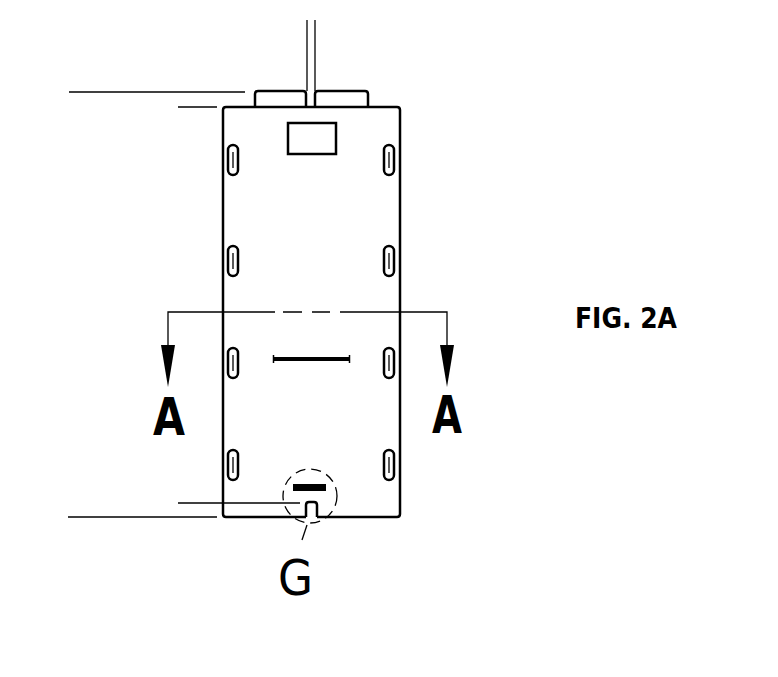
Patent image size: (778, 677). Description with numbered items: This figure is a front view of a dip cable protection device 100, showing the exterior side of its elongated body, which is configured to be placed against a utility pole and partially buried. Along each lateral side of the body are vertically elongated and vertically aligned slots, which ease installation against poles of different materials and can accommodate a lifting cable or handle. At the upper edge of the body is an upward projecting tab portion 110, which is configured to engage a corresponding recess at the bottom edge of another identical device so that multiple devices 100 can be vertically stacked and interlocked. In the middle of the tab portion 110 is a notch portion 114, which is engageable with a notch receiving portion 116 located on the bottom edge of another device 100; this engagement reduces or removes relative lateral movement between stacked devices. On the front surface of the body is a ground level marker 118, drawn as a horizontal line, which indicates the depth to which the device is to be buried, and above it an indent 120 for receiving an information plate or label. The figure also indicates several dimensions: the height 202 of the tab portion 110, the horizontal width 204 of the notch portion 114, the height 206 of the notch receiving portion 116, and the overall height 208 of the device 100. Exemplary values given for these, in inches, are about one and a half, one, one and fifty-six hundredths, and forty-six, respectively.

The dip cable protection device 100 is at (412, 218).
The tab portion 110 is at (270, 80).
The notch portion 114 is at (330, 82).
The notch receiving portion 116 is at (318, 523).
The ground level marker 118 is at (314, 362).
The indent 120 is at (307, 156).
The height of the tab portion 202 is at (189, 55).
The horizontal width of the notch portion 204 is at (272, 32).
The height of the notch receiving portion 206 is at (190, 460).
The height of the device 208 is at (81, 92).